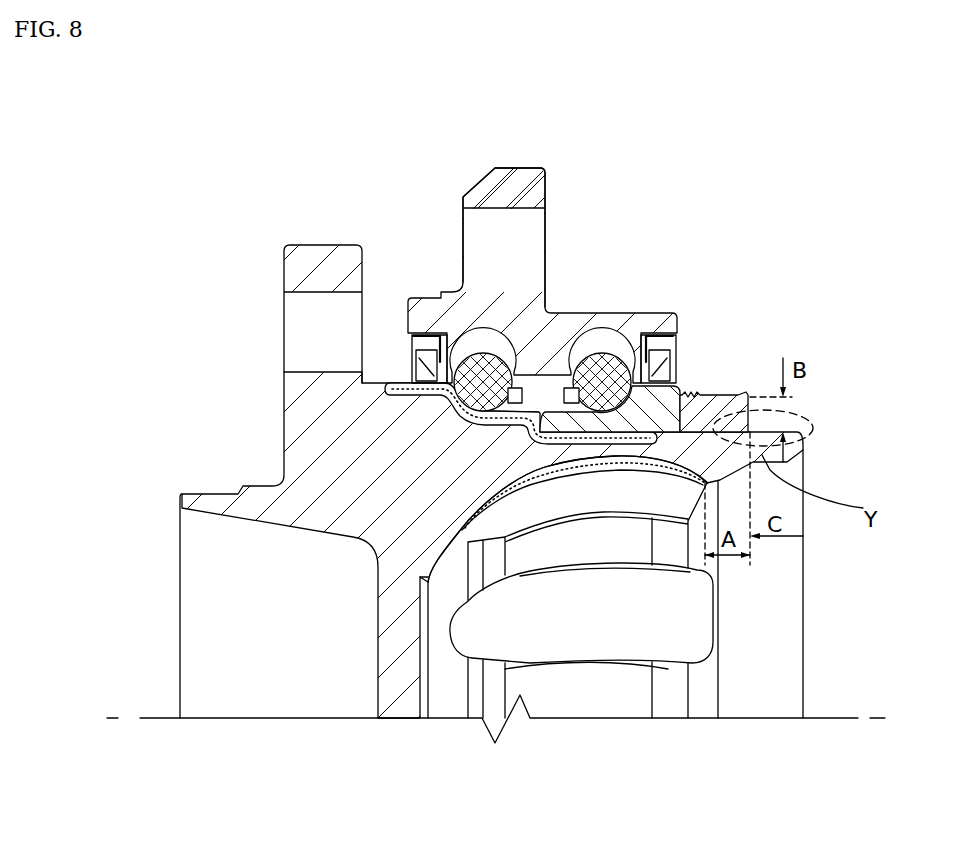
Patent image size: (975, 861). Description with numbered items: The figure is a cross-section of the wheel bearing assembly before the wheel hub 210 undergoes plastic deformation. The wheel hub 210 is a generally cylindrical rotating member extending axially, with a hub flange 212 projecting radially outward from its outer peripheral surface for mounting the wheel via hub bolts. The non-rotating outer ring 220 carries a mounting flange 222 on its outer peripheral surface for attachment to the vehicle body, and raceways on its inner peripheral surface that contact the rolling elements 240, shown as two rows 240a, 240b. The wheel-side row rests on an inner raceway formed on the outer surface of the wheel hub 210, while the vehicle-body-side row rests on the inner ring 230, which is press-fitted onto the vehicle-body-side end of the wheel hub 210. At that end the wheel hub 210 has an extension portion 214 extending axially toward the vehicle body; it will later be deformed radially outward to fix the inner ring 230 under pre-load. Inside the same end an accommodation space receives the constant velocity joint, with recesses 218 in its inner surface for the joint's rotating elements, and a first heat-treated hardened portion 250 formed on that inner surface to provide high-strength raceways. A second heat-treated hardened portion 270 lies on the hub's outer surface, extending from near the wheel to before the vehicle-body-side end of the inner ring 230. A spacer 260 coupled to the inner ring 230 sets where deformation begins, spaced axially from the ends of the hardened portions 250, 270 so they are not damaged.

The wheel hub 210 is at (197, 498).
The hub flange 212 is at (307, 258).
The extension portion 214 is at (805, 433).
The recesses 218 is at (680, 624).
The outer ring 220 is at (445, 306).
The mounting flange 222 is at (506, 176).
The inner ring 230 is at (650, 400).
The rolling elements 240 is at (561, 270).
The rolling elements 240a is at (489, 363).
The rolling elements 240b is at (606, 362).
The first heat-treated hardened portion 250 is at (580, 470).
The spacer 260 is at (717, 407).
The second heat-treated hardened portion 270 is at (463, 435).